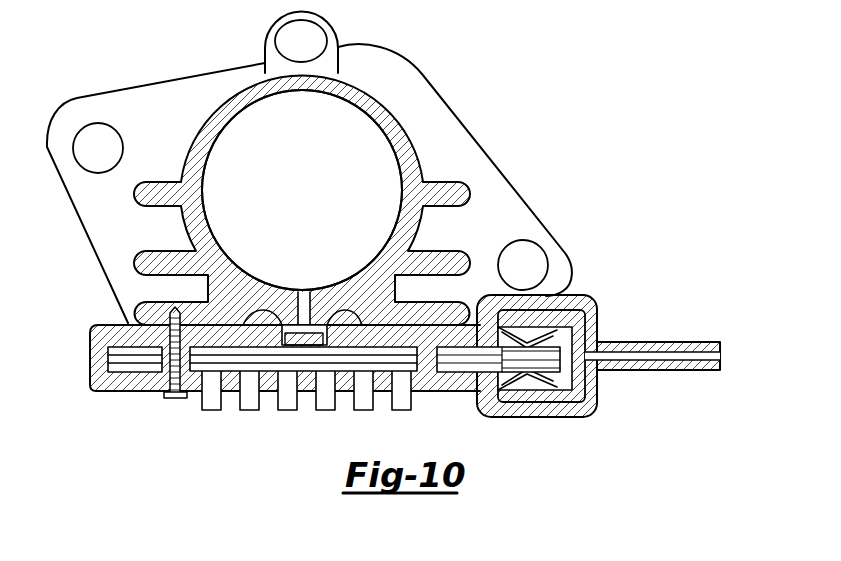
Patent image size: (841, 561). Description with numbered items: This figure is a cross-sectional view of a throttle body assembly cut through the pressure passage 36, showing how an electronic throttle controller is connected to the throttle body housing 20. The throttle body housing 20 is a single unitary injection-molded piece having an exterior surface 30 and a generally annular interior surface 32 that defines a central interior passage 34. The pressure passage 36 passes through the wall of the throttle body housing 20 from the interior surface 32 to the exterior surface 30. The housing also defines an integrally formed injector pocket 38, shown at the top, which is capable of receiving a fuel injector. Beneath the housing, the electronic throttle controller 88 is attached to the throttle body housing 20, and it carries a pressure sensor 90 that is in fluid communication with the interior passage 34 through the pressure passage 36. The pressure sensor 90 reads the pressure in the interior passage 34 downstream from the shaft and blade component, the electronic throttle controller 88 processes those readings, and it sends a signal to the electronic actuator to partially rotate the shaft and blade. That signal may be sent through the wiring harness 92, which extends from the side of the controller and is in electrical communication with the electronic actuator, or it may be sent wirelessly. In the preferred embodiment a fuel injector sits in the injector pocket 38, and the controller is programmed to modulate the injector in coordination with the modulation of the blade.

The throttle body housing 20 is at (465, 149).
The exterior surface 30 is at (210, 104).
The interior surface 32 is at (374, 120).
The interior passage 34 is at (317, 193).
The pressure passage 36 is at (303, 303).
The integrally formed injector pocket 38 is at (310, 40).
The electronic throttle controller 88 is at (229, 360).
The pressure sensor 90 is at (305, 340).
The wiring harness 92 is at (652, 358).